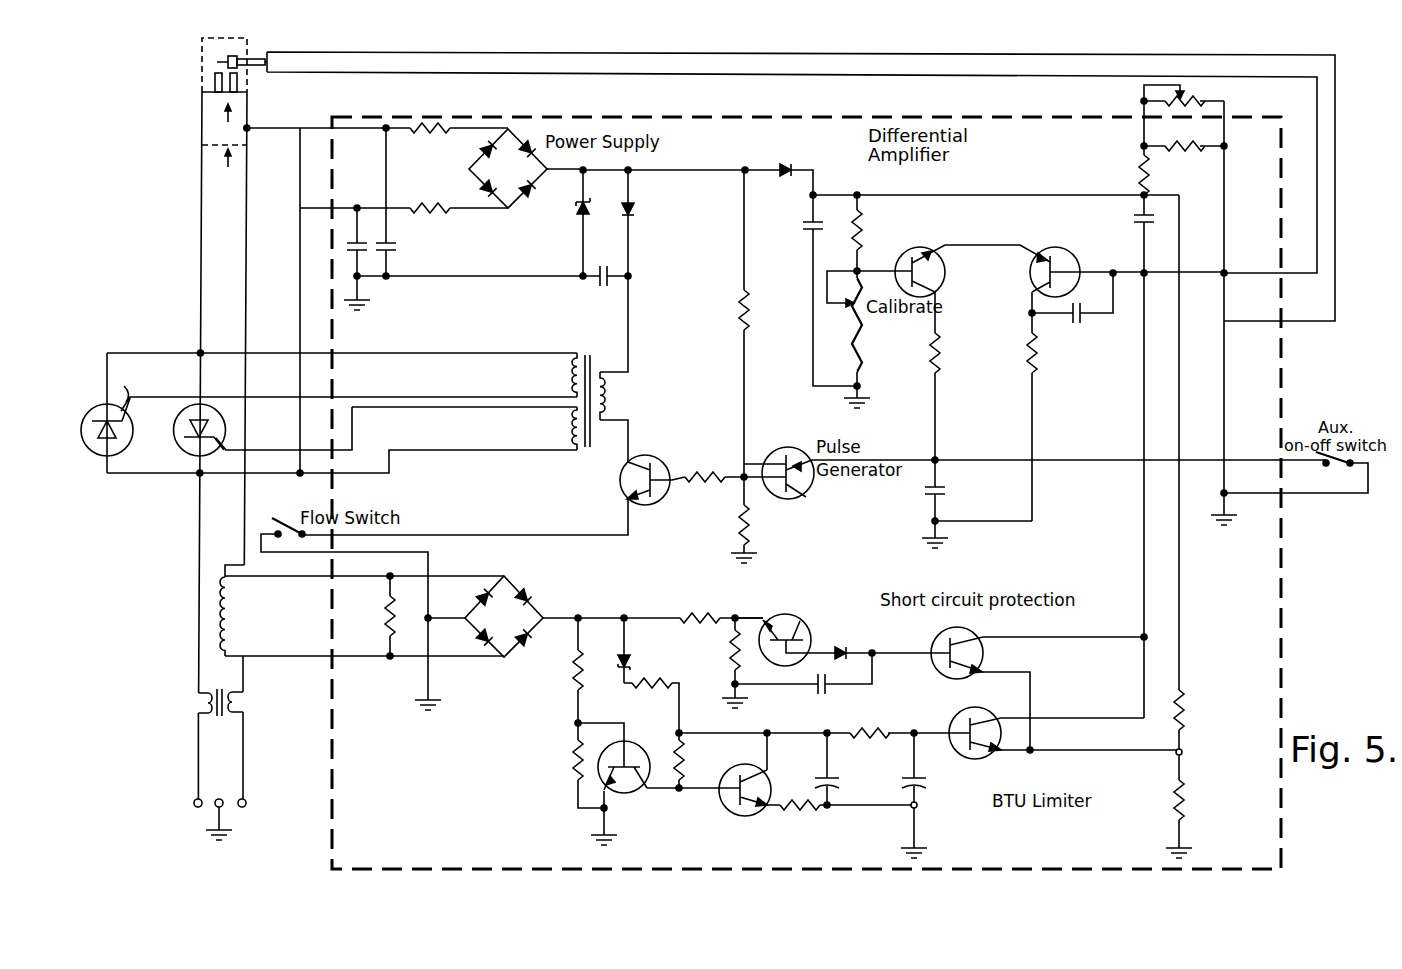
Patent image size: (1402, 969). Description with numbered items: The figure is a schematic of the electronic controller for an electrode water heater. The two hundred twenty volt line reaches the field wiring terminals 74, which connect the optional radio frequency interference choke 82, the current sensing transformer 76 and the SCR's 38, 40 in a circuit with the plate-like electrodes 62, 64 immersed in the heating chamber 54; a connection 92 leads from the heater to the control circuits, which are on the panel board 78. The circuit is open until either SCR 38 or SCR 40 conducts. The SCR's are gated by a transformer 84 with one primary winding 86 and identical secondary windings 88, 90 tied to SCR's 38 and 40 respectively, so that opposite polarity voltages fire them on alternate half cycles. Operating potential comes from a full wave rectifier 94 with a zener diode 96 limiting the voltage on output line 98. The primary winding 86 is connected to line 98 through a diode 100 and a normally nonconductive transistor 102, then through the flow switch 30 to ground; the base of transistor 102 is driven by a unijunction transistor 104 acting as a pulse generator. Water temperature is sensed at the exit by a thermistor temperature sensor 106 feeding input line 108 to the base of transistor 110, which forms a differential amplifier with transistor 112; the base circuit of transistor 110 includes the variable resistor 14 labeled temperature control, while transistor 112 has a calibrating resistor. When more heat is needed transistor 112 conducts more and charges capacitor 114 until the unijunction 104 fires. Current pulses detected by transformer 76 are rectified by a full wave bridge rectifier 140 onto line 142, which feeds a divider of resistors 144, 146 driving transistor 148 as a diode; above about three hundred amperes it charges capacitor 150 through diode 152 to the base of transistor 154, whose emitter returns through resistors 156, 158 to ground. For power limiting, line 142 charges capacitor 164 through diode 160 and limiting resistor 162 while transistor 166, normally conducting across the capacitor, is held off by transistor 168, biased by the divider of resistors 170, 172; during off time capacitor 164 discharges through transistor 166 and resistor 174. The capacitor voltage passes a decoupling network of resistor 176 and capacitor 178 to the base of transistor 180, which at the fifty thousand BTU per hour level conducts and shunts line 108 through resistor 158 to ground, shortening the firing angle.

The variable resistor 14 is at (1144, 84).
The flow switch 30 is at (284, 527).
The SCR 38 is at (99, 413).
The SCR 40 is at (192, 456).
The heating chamber 54 is at (208, 88).
The electrode 62 is at (213, 76).
The electrode 64 is at (238, 82).
The field wiring terminals 74 is at (236, 814).
The current sensing transformer 76 is at (222, 619).
The panel board 78 is at (1281, 583).
The radio frequency interference choke 82 is at (186, 707).
The transformer 84 is at (577, 379).
The primary winding 86 is at (612, 367).
The secondary winding 88 is at (572, 379).
The secondary winding 90 is at (572, 433).
The flow conduit connection 92 is at (249, 122).
The full wave rectifier 94 is at (464, 156).
The zener diode 96 is at (580, 211).
The output line 98 is at (612, 175).
The diode 100 is at (636, 210).
The transistor 102 is at (622, 481).
The unijunction transistor 104 is at (803, 488).
The thermistor temperature sensor 106 is at (233, 55).
The input line 108 is at (1224, 277).
The transistor 110 is at (1075, 243).
The transistor 112 is at (945, 279).
The capacitor 114 is at (946, 489).
The full wave bridge rectifier 140 is at (534, 587).
The output line 142 is at (560, 618).
The resistor 144 is at (710, 617).
The resistor 146 is at (730, 650).
The transistor 148 is at (795, 619).
The capacitor 150 is at (830, 692).
The diode 152 is at (832, 650).
The transistor 154 is at (968, 633).
The resistor 156 is at (1183, 708).
The resistor 158 is at (1184, 803).
The diode 160 is at (632, 662).
The limiting resistor 162 is at (654, 690).
The capacitor 164 is at (843, 780).
The transistor 166 is at (736, 810).
The transistor 168 is at (630, 785).
The resistor 170 is at (574, 666).
The resistor 172 is at (576, 748).
The resistor 174 is at (804, 815).
The resistor 176 is at (882, 733).
The capacitor 178 is at (921, 783).
The transistor 180 is at (987, 753).